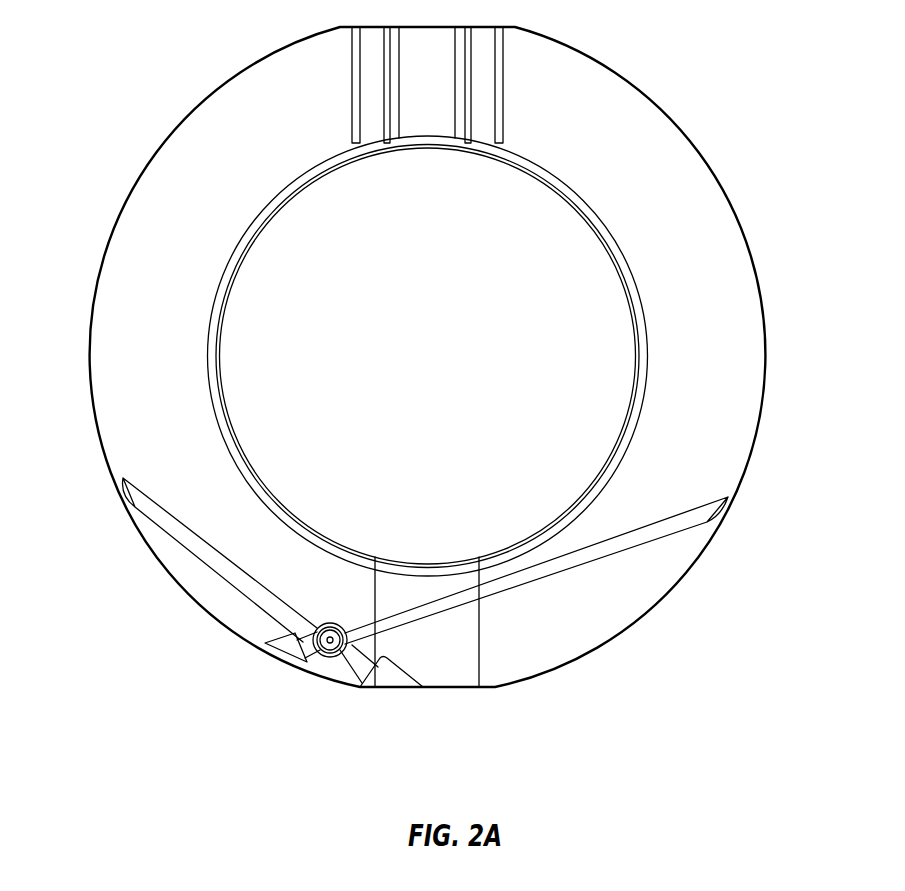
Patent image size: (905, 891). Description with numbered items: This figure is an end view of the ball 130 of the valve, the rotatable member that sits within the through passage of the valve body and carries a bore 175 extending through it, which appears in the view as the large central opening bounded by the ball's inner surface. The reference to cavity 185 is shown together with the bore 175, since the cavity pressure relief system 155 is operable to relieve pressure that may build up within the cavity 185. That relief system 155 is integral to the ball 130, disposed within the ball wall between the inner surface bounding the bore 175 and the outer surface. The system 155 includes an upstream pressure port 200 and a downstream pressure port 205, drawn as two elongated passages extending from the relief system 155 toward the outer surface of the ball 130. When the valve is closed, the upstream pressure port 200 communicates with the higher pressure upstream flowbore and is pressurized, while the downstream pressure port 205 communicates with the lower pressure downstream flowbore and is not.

The ball 130 is at (622, 135).
The cavity pressure relief system 155 is at (323, 683).
The bore 175 is at (420, 368).
The cavity 185 is at (480, 368).
The upstream pressure port 200 is at (177, 530).
The downstream pressure port 205 is at (663, 528).